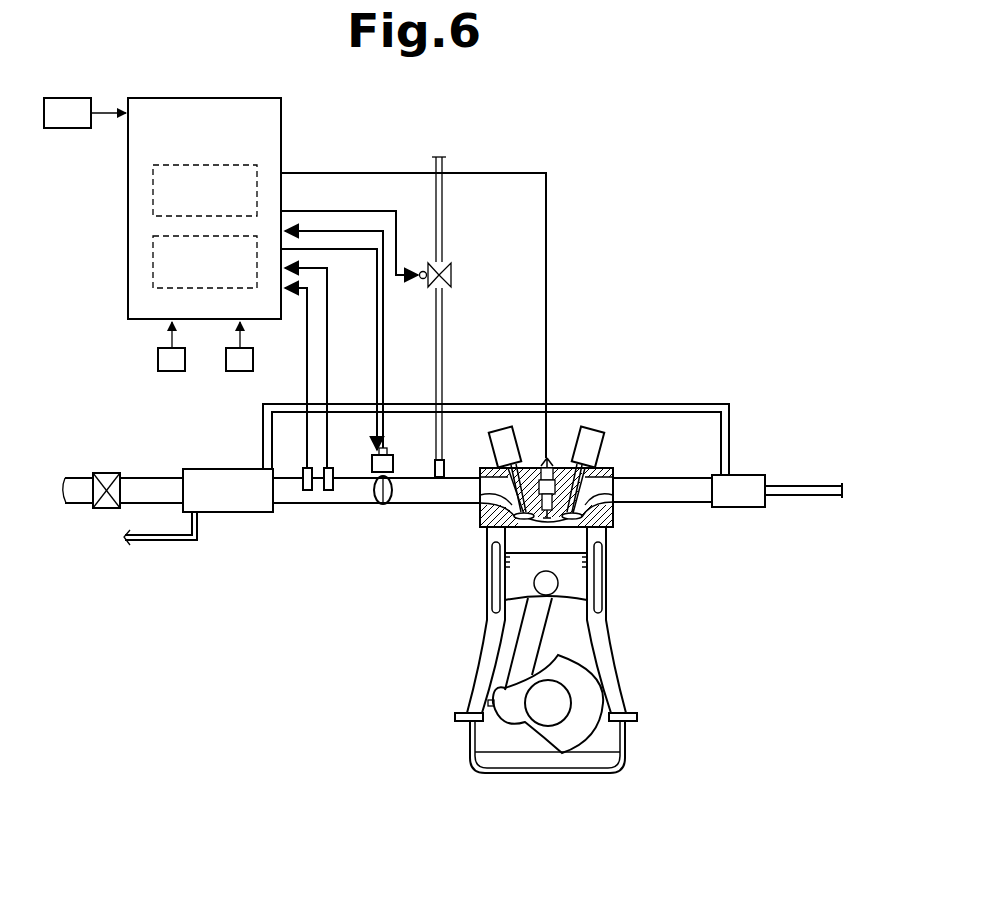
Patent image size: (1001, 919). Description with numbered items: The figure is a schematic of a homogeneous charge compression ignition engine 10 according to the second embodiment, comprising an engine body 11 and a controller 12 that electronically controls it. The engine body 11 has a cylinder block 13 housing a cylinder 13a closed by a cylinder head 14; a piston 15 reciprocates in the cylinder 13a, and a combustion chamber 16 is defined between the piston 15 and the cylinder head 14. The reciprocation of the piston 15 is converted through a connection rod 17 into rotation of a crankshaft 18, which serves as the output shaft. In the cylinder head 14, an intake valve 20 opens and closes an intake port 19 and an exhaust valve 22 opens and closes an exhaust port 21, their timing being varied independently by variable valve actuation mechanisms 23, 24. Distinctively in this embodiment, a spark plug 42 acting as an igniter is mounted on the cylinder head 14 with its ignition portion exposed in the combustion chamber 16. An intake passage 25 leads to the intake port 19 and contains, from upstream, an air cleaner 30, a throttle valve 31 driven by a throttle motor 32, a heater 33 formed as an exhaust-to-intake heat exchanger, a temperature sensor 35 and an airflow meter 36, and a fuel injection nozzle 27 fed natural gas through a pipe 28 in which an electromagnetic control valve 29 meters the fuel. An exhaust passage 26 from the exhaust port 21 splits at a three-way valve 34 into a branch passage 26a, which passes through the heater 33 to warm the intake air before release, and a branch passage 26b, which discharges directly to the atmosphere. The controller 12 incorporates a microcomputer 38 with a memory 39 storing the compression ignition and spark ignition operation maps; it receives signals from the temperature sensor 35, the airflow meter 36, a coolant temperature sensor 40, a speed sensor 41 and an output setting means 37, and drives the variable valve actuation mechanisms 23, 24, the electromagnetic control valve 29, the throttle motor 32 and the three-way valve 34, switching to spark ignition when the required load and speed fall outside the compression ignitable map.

The homogeneous charge compression ignition engine 10 is at (619, 172).
The engine body 11 is at (444, 686).
The controller 12 is at (286, 113).
The cylinder block 13 is at (486, 598).
The cylinder 13a is at (586, 585).
The cylinder head 14 is at (486, 516).
The piston 15 is at (498, 630).
The combustion chamber 16 is at (595, 575).
The connection rod 17 is at (538, 626).
The crankshaft 18 is at (542, 718).
The intake port 19 is at (481, 503).
The intake valve 20 is at (505, 530).
The exhaust port 21 is at (614, 518).
The exhaust valve 22 is at (615, 477).
The variable valve actuation mechanism 23 is at (494, 434).
The variable valve actuation mechanism 24 is at (600, 444).
The intake passage 25 is at (290, 504).
The exhaust passage 26 is at (684, 504).
The branch passage 26a is at (731, 417).
The branch passage 26b is at (822, 497).
The fuel injection nozzle 27 is at (446, 468).
The pipe 28 is at (445, 312).
The electromagnetic control valve 29 is at (452, 270).
The air cleaner 30 is at (104, 509).
The throttle valve 31 is at (395, 463).
The throttle motor 32 is at (369, 462).
The heater 33 is at (229, 513).
The three-way valve 34 is at (746, 508).
The temperature sensor 35 is at (335, 491).
The airflow meter 36 is at (300, 467).
The output setting means 37 is at (66, 128).
The microcomputer 38 is at (150, 190).
The memory 39 is at (150, 260).
The coolant temperature sensor 40 is at (172, 371).
The speed sensor 41 is at (240, 371).
The spark plug 42 is at (587, 552).